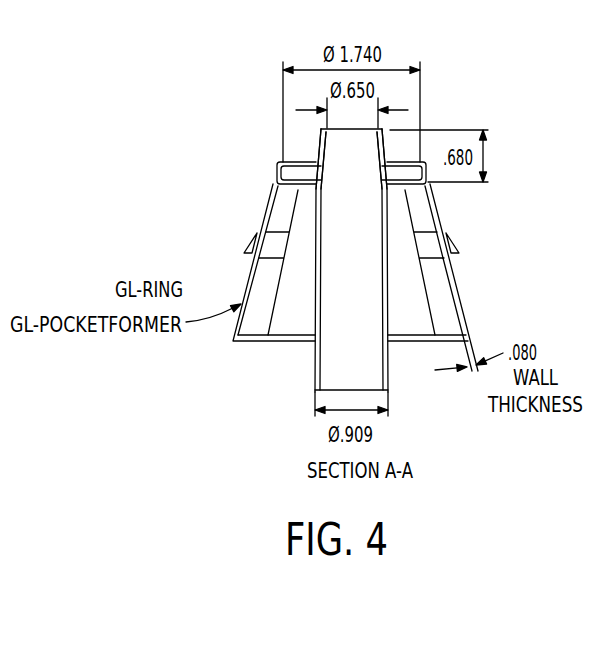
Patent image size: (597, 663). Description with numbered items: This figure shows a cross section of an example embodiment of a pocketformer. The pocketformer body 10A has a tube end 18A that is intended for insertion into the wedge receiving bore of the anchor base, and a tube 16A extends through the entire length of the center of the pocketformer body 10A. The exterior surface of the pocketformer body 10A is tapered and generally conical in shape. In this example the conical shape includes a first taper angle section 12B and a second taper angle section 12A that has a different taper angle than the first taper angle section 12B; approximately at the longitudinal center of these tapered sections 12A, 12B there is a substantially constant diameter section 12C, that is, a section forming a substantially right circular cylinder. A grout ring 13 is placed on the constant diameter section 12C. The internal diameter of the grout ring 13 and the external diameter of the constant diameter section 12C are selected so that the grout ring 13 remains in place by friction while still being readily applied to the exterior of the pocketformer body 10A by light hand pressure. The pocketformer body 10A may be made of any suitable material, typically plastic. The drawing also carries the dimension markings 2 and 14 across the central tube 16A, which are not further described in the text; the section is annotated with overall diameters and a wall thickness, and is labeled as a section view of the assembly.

The pocketformer body 10A is at (226, 140).
The tube 2 is at (383, 265).
The tube upper tapered section 14 is at (379, 162).
The tube end 18A is at (387, 132).
The tube 16A is at (392, 378).
The second taper angle section 12A is at (440, 214).
The first taper angle section 12B is at (468, 310).
The constant diameter section 12C is at (265, 247).
The grout ring 13 is at (236, 245).